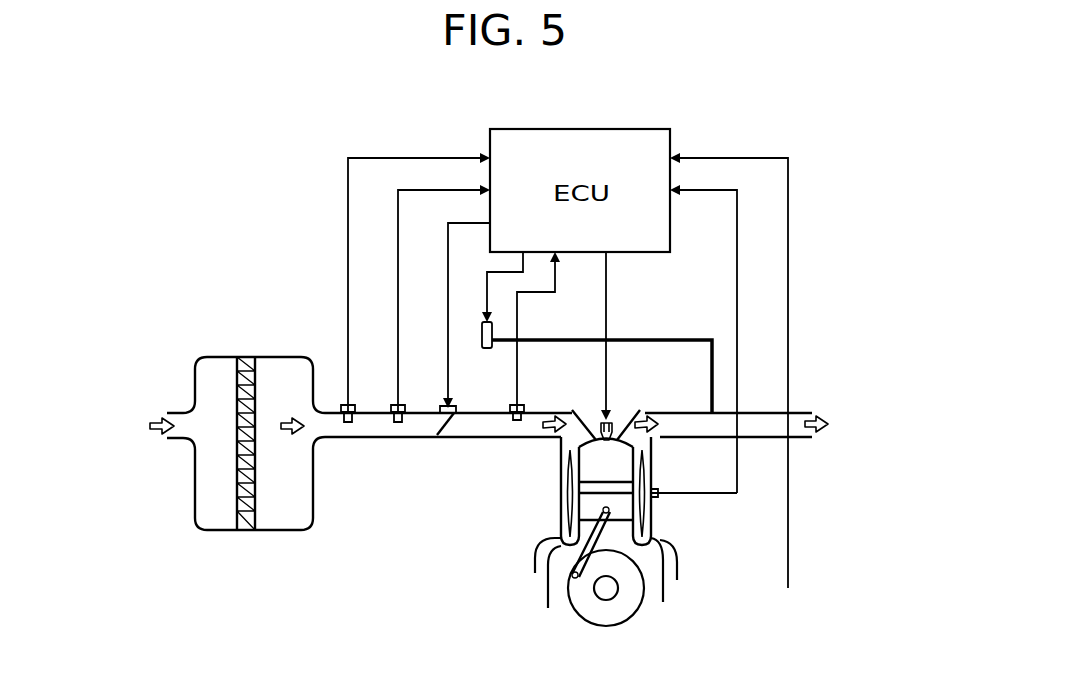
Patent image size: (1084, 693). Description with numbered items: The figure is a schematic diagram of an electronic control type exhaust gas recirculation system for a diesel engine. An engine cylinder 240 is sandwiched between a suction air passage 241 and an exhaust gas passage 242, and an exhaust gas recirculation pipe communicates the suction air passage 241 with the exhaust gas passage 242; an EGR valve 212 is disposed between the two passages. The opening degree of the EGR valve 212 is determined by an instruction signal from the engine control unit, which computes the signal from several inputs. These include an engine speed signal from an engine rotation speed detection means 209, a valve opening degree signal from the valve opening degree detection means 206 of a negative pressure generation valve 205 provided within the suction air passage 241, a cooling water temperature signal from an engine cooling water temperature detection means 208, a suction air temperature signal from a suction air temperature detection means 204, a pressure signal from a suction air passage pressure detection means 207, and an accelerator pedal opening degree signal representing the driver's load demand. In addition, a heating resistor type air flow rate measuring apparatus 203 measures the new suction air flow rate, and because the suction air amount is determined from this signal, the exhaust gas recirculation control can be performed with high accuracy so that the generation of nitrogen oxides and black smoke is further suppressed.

The heating resistor type air flow rate measuring apparatus 203 is at (337, 443).
The suction air temperature detection means 204 is at (388, 437).
The negative pressure generation valve 205 is at (437, 435).
The valve opening degree detection means 206 is at (447, 404).
The suction air passage pressure detection means 207 is at (513, 437).
The engine cooling water temperature detection means 208 is at (788, 588).
The engine rotation speed detection means 209 is at (635, 603).
The EGR valve 212 is at (484, 324).
The engine cylinder 240 is at (656, 495).
The suction air passage 241 is at (557, 447).
The exhaust gas passage 242 is at (650, 445).